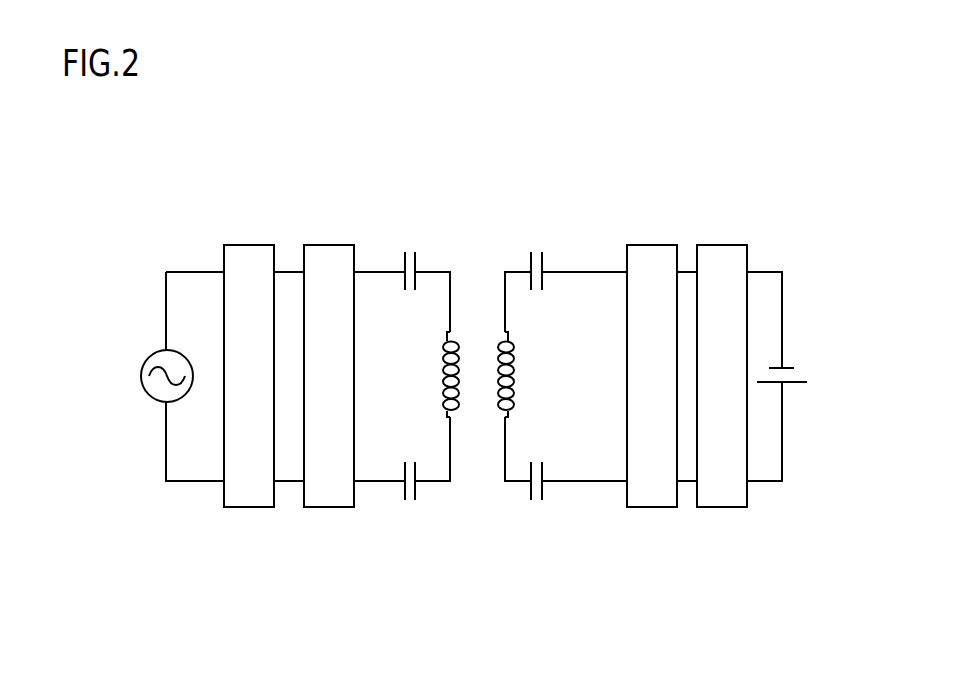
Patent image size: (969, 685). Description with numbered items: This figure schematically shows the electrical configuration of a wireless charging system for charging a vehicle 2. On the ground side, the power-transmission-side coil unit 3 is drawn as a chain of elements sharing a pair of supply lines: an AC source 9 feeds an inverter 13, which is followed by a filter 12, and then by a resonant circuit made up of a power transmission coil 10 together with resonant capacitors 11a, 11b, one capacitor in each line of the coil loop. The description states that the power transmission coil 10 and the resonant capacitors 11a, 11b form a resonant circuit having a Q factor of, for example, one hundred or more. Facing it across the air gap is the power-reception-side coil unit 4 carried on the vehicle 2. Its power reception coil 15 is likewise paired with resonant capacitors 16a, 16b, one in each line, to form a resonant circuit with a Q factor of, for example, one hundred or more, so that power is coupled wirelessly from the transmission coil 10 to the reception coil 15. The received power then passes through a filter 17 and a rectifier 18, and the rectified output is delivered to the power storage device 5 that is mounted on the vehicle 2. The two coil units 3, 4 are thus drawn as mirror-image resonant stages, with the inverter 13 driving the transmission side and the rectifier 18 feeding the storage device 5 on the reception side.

The vehicle 2 is at (604, 134).
The power-transmission-side coil unit 3 is at (237, 158).
The power-reception-side coil unit 4 is at (507, 158).
The power storage device 5 is at (787, 367).
The AC power supply 9 is at (140, 375).
The power transmission coil 10 is at (463, 350).
The resonant capacitor 11a is at (405, 462).
The resonant capacitor 11b is at (405, 260).
The filter 12 is at (330, 249).
The inverter 13 is at (254, 249).
The power reception coil 15 is at (499, 350).
The resonant capacitor 16a is at (540, 262).
The resonant capacitor 16b is at (545, 468).
The filter 17 is at (652, 292).
The rectifier 18 is at (726, 292).